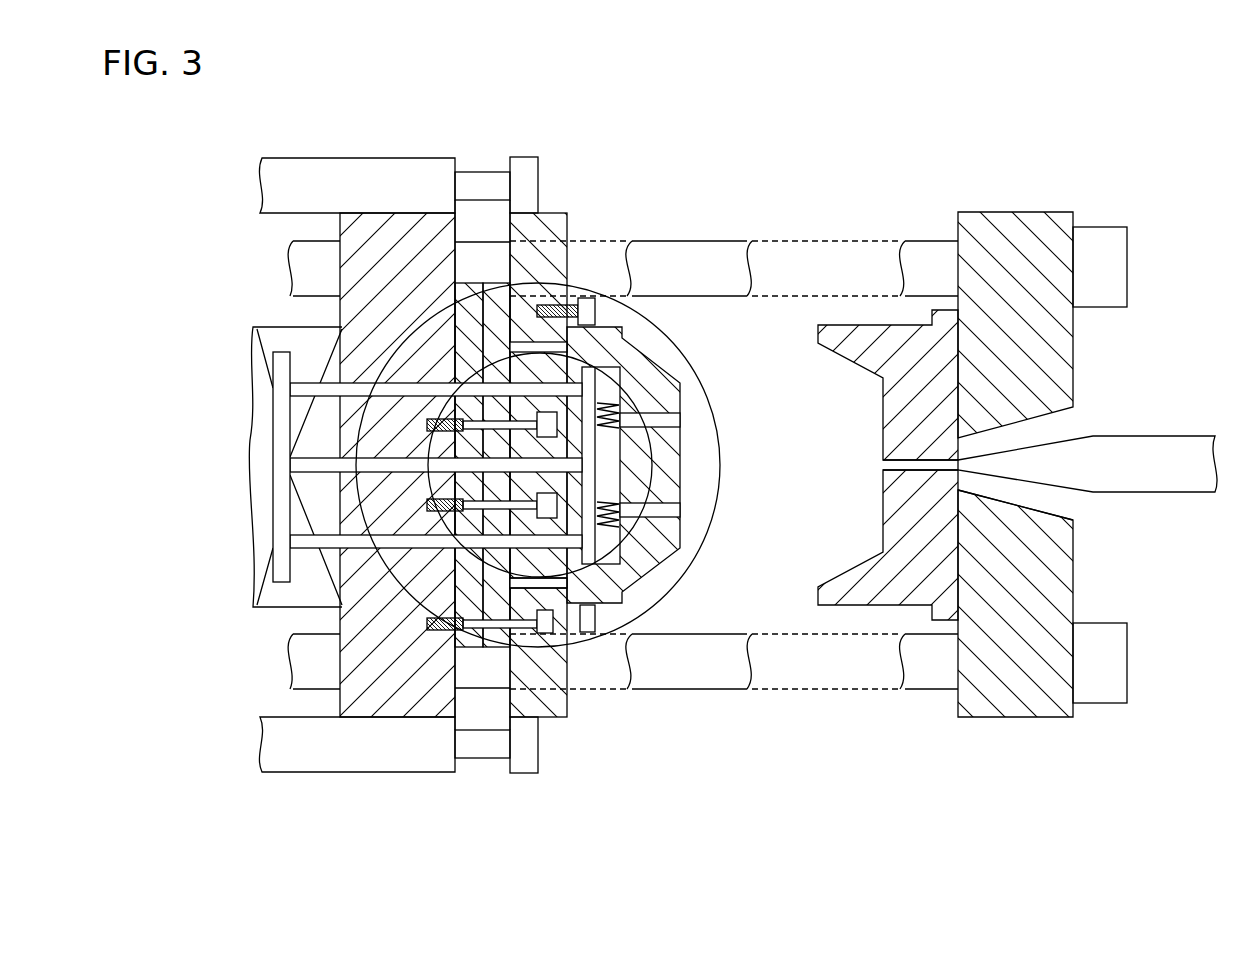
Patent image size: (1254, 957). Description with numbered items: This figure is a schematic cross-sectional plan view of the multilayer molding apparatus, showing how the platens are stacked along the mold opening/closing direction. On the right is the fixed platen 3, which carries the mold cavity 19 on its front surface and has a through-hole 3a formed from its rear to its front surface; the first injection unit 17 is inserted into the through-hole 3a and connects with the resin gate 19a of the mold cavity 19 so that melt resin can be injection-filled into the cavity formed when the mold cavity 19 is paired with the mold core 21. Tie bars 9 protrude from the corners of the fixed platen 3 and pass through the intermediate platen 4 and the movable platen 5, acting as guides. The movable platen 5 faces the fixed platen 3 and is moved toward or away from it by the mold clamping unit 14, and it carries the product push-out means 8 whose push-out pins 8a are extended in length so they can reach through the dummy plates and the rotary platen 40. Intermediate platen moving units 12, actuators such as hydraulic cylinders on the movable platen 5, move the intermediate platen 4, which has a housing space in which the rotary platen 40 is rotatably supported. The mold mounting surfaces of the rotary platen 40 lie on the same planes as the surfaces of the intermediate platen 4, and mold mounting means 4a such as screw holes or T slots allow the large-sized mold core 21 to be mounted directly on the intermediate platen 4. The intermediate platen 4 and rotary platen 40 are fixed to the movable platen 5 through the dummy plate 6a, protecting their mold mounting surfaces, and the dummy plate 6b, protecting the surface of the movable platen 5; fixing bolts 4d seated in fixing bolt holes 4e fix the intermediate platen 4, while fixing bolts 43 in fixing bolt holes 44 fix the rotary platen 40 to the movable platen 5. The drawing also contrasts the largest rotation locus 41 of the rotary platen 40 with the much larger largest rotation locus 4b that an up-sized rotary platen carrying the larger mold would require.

The fixed platen 3 is at (1007, 222).
The through-hole 3a is at (1043, 505).
The intermediate platen 4 is at (548, 233).
The mold mounting means 4a is at (553, 308).
The largest rotation locus 4b is at (694, 366).
The fixing bolts 4d is at (545, 640).
The fixing bolt holes 4e is at (570, 728).
The movable platen 5 is at (401, 237).
The dummy plate 6a is at (497, 285).
The dummy plate 6b is at (468, 285).
The product push-out means 8 is at (279, 422).
The push-out pins 8a is at (427, 622).
The tie bars 9 is at (927, 253).
The intermediate platen moving units 12 is at (355, 170).
The mold clamping unit 14 is at (258, 505).
The first injection unit 17 is at (1178, 443).
The mold cavity 19 is at (860, 330).
The resin gate 19a is at (917, 465).
The mold core 21 is at (672, 477).
The rotary platen 40 is at (550, 568).
The largest rotation locus 41 is at (627, 537).
The fixing bolts 43 is at (550, 427).
The fixing bolt holes 44 is at (689, 465).